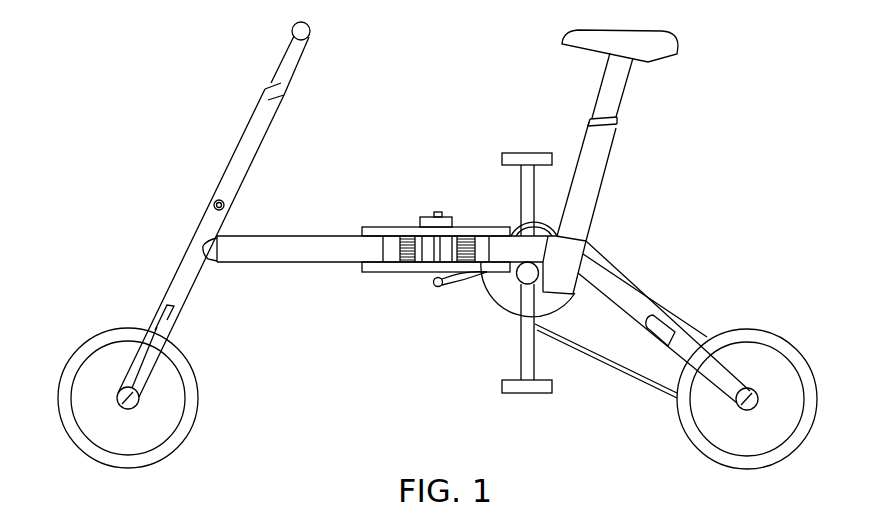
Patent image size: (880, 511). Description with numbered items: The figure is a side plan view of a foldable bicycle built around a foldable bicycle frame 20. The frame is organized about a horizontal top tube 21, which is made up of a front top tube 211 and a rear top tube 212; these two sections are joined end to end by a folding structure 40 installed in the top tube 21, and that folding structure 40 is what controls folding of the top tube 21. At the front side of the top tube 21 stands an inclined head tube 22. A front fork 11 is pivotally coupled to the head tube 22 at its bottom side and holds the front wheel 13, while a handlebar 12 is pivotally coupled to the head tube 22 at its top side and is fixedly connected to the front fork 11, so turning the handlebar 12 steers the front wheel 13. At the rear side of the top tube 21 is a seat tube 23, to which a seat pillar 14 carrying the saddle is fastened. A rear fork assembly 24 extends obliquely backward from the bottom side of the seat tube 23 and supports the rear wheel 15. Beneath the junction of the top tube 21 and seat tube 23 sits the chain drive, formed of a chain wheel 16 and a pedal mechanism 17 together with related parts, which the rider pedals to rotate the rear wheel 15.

The front fork 11 is at (143, 343).
The handlebar 12 is at (280, 67).
The front wheel 13 is at (78, 362).
The seat pillar 14 is at (617, 85).
The rear wheel 15 is at (773, 338).
The chain wheel 16 is at (550, 302).
The pedal mechanism 17 is at (525, 357).
The foldable bicycle frame 20 is at (320, 127).
The top tube 21 is at (395, 377).
The head tube 22 is at (196, 233).
The seat tube 23 is at (595, 190).
The rear fork assembly 24 is at (632, 307).
The folding structure 40 is at (414, 210).
The front top tube 211 is at (293, 257).
The rear top tube 212 is at (498, 251).